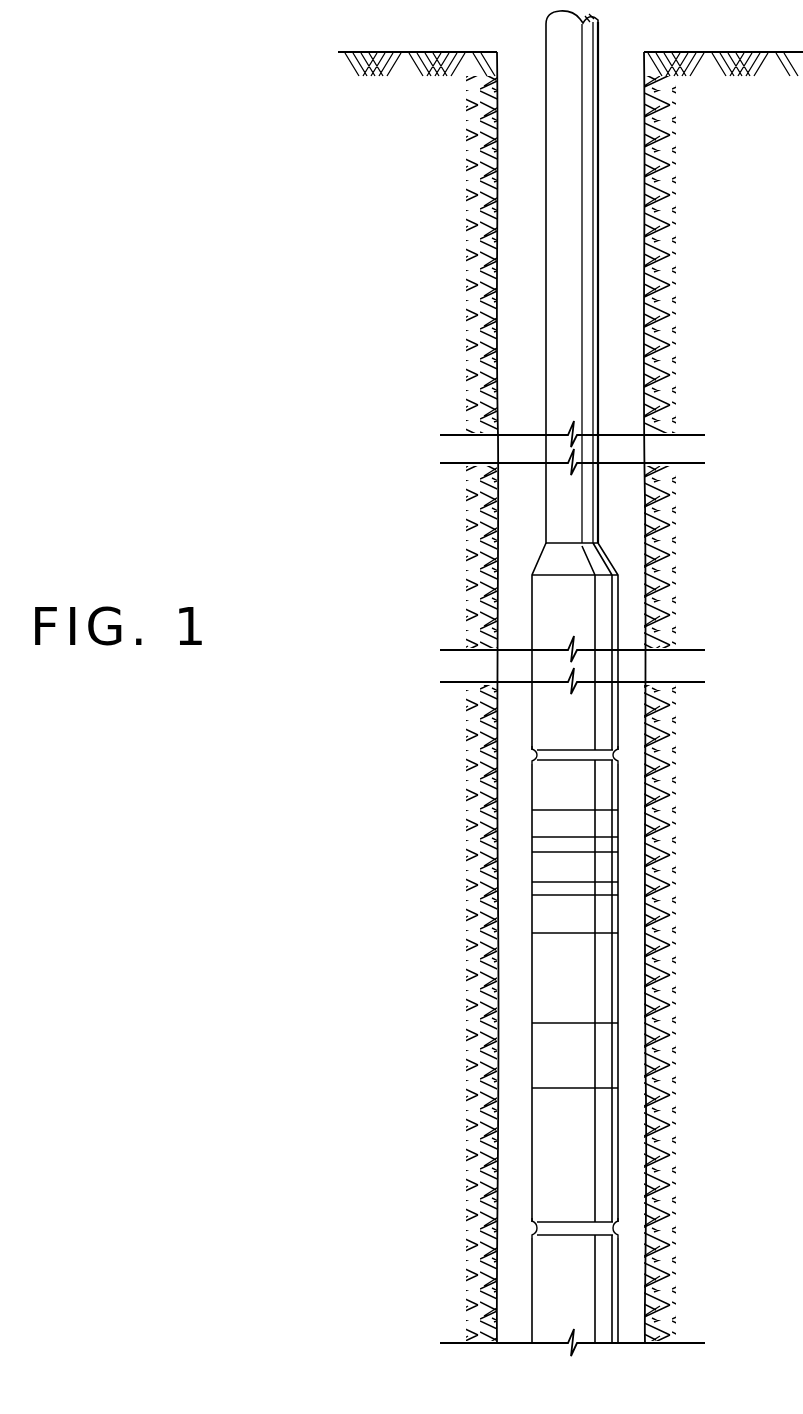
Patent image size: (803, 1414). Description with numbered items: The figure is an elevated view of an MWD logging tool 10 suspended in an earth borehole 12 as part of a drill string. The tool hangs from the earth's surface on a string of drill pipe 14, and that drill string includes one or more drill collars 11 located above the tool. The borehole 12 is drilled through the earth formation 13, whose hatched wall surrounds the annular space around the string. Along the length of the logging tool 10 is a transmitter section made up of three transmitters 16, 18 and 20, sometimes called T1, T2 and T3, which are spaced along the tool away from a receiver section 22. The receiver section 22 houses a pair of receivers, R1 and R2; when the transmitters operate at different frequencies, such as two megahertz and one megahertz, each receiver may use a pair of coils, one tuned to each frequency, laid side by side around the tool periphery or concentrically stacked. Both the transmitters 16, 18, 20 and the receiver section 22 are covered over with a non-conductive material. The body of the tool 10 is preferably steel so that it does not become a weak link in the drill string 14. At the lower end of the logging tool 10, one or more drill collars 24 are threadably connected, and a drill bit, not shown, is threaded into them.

The logging tool 10 is at (476, 988).
The drill collar 11 is at (532, 601).
The earth borehole 12 is at (518, 301).
The earth formation 13 is at (473, 385).
The string of drill pipe 14 is at (562, 177).
The transmitter 16 is at (547, 914).
The transmitter 18 is at (548, 867).
The transmitter 20 is at (553, 823).
The receiver section 22 is at (557, 1065).
The drill collar 24 is at (565, 1297).